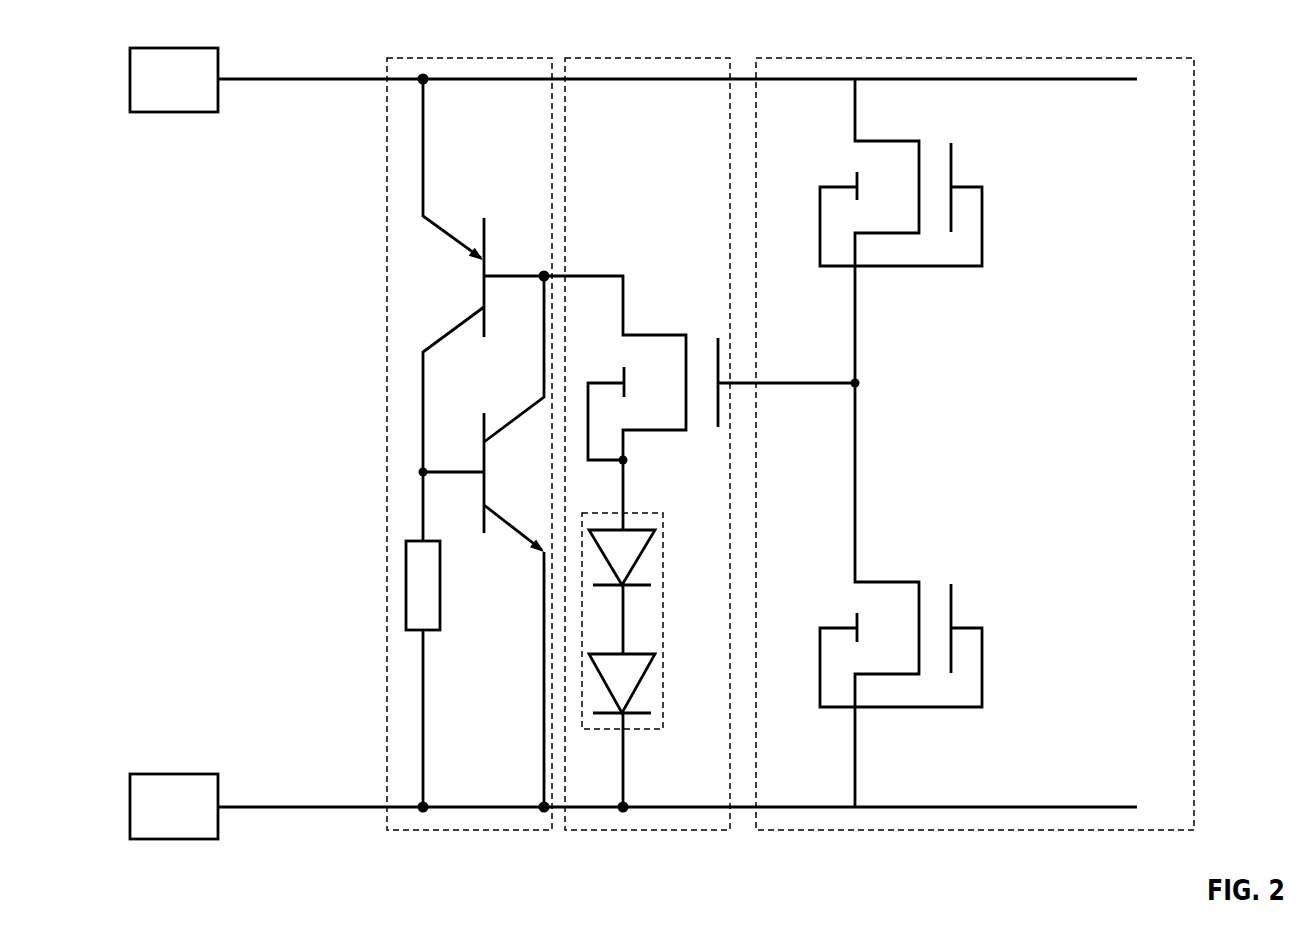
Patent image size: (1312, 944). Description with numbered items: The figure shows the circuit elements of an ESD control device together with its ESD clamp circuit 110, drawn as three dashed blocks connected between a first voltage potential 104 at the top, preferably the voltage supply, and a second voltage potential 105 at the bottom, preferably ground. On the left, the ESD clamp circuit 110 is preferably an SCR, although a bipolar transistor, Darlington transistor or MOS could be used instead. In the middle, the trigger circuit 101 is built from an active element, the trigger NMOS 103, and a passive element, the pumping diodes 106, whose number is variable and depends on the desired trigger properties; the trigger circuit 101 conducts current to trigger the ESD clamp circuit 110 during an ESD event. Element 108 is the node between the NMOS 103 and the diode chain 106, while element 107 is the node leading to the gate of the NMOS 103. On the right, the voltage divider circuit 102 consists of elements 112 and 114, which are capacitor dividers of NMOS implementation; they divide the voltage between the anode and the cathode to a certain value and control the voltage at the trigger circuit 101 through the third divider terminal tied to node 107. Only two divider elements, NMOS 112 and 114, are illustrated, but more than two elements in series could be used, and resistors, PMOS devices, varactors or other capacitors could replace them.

The trigger circuit 101 is at (637, 428).
The voltage divider circuit 102 is at (971, 429).
The trigger NMOS 103 is at (653, 335).
The first voltage potential 104 is at (284, 78).
The second voltage potential 105 is at (284, 806).
The pumping diodes 106 is at (638, 510).
The node to gate of the NMOS 107 is at (787, 380).
The node between the NMOS and the diode chain 108 is at (658, 430).
The ESD clamp circuit 110 is at (430, 57).
The NMOS (capacitor divider element) 112 is at (882, 138).
The NMOS (capacitor divider element) 114 is at (885, 580).